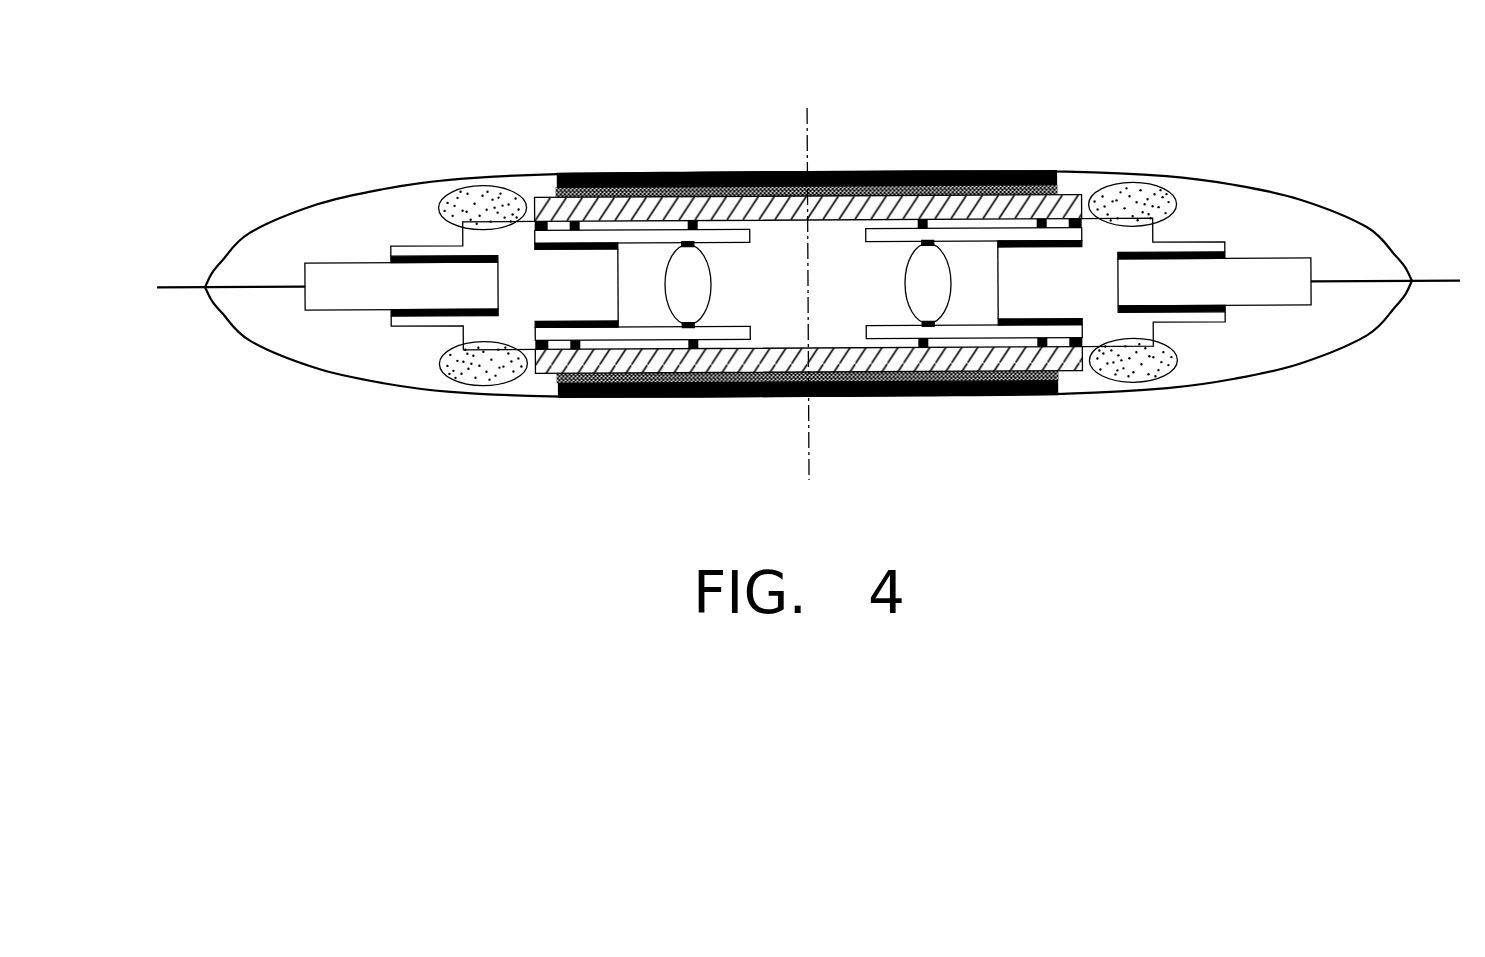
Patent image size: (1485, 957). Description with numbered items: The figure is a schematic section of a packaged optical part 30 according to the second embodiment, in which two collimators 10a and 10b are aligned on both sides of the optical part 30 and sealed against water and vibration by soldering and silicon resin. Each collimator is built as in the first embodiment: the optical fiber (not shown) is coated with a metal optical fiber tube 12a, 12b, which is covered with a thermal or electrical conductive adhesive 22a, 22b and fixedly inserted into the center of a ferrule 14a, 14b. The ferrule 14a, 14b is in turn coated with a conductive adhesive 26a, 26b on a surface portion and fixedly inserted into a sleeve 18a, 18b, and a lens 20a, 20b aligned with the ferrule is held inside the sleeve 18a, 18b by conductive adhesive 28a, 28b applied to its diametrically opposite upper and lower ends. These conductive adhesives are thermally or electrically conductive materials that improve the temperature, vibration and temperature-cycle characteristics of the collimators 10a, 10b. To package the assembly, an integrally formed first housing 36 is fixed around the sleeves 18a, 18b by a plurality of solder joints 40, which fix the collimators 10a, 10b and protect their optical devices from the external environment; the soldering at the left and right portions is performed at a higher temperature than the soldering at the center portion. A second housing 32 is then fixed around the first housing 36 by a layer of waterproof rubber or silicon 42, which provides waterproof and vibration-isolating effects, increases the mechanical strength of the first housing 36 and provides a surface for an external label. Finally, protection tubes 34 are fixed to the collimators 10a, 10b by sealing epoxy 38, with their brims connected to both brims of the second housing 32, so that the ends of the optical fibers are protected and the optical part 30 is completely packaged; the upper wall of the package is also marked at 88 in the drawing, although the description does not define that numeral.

The optical part 30 is at (1262, 114).
The collimator 10a is at (1252, 321).
The collimator 10b is at (318, 248).
The metal optical fiber tube 12a is at (1282, 263).
The metal optical fiber tube 12b is at (342, 302).
The ferrule 14a is at (1212, 247).
The ferrule 14b is at (403, 250).
The sleeve 18a is at (882, 239).
The sleeve 18b is at (738, 240).
The lens 20a is at (905, 278).
The lens 20b is at (710, 280).
The conductive adhesive 22a is at (1217, 313).
The conductive adhesive 22b is at (400, 316).
The conductive adhesive 26a is at (1038, 327).
The conductive adhesive 26b is at (578, 327).
The conductive adhesive 28a is at (943, 326).
The conductive adhesive 28b is at (687, 328).
The second housing 32 is at (985, 176).
The protection tube 34 is at (250, 348).
The first housing 36 is at (1006, 192).
The sealing epoxy 38 is at (472, 202).
The solder joint 40 is at (577, 208).
The waterproof rubber or silicon 42 is at (862, 385).
The upper wall assembly 88 is at (806, 234).